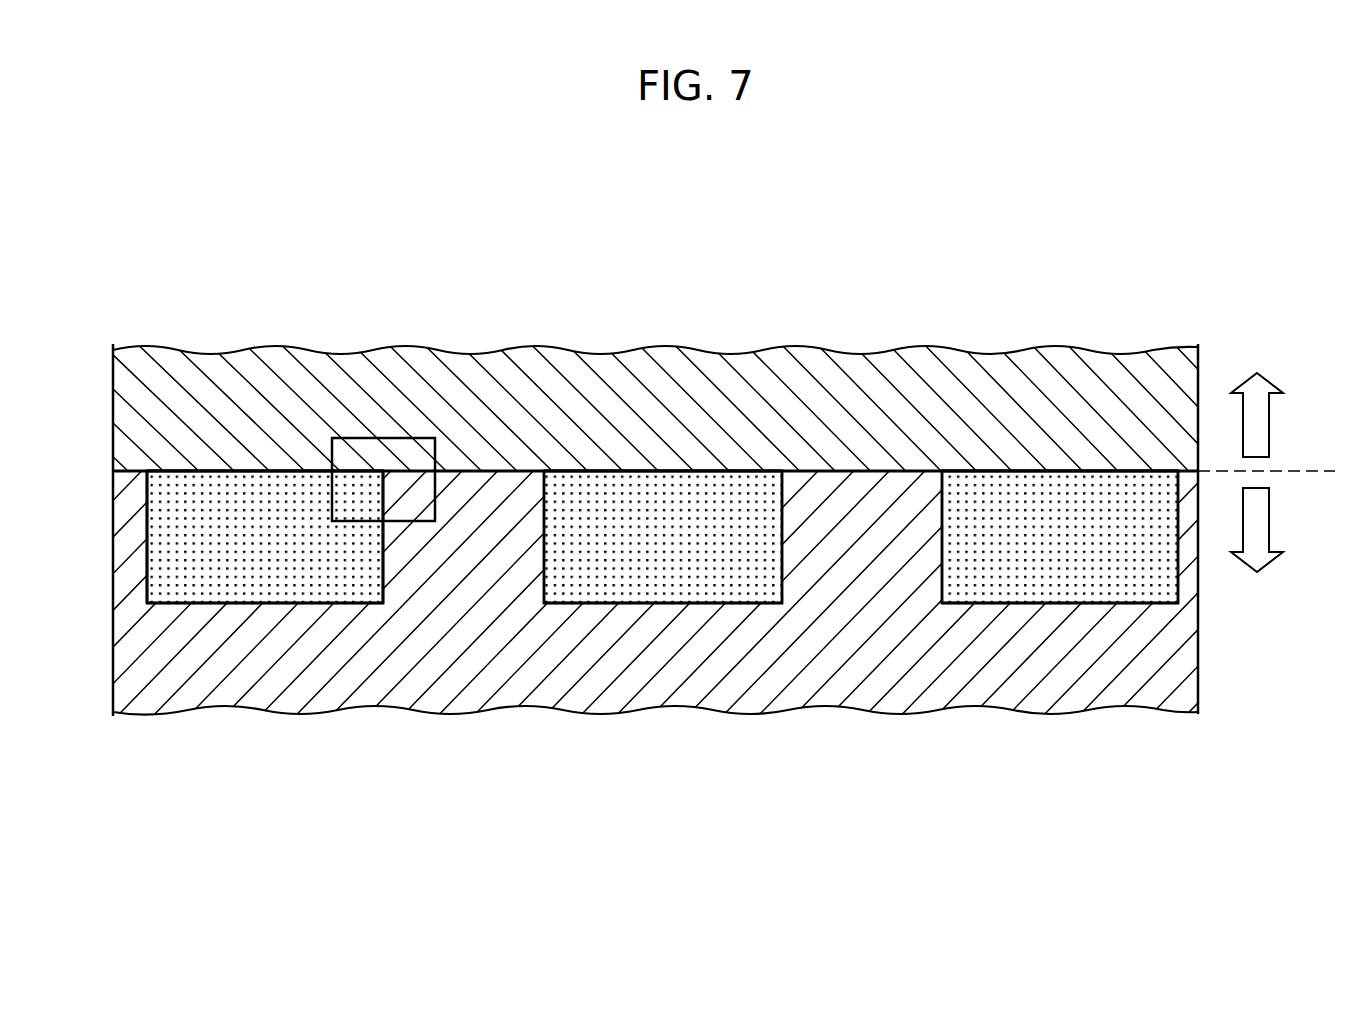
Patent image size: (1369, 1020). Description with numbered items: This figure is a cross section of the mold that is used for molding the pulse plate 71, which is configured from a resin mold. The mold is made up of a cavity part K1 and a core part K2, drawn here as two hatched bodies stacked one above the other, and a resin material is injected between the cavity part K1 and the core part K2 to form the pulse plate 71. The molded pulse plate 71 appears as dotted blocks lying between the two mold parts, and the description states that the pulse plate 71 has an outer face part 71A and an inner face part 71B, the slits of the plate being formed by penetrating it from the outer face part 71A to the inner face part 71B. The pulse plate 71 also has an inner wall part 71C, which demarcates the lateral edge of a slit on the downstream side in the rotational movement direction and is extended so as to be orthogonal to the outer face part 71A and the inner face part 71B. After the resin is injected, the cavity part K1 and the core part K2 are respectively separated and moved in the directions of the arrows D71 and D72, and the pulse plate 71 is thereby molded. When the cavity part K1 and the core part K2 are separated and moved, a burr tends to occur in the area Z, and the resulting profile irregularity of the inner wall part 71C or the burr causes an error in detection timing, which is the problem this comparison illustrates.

The cavity part K1 is at (1147, 375).
The core part K2 is at (1143, 678).
The pulse plate 71 is at (261, 580).
The outer face part 71A is at (1033, 603).
The inner face part 71B is at (256, 482).
The inner wall part 71C is at (383, 556).
The area Z is at (396, 438).
The arrow D71 is at (1262, 428).
The arrow D72 is at (1262, 525).